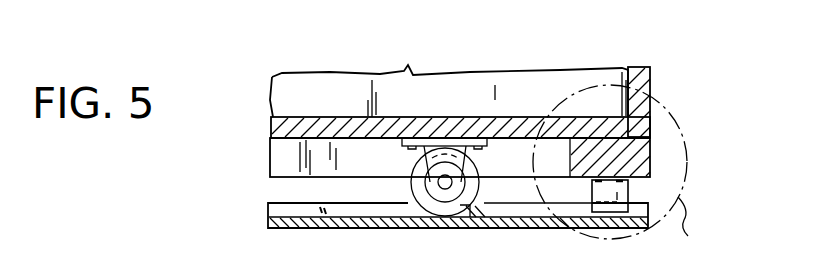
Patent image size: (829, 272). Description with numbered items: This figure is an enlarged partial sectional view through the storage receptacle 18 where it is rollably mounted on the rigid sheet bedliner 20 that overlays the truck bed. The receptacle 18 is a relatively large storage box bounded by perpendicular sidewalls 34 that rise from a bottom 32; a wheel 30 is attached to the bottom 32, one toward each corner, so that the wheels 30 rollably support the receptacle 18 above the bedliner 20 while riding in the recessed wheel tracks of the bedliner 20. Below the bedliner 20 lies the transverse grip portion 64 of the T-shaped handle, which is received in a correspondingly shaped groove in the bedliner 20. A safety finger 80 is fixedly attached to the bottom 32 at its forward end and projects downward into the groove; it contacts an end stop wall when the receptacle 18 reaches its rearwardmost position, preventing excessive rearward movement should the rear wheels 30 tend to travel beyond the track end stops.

The receptacle 18 is at (284, 47).
The bedliner 20 is at (290, 203).
The wheels 30 is at (420, 197).
The bottom 32 is at (471, 125).
The sidewalls 34 is at (438, 99).
The grip portion 64 is at (340, 210).
The safety finger 80 is at (630, 192).